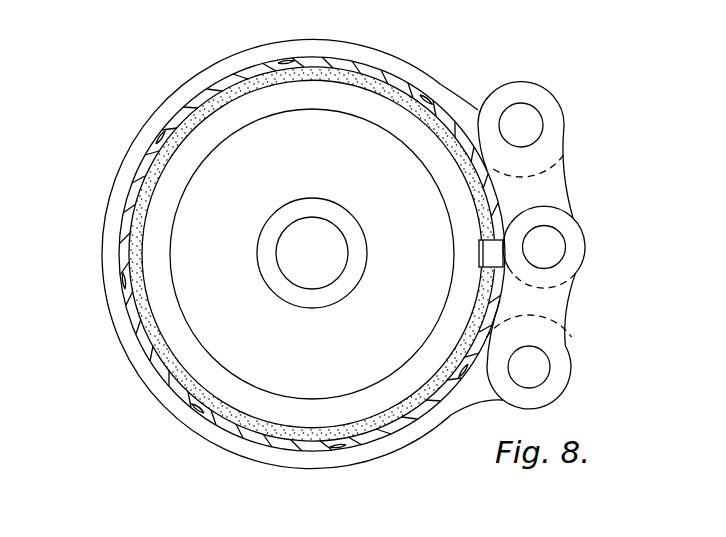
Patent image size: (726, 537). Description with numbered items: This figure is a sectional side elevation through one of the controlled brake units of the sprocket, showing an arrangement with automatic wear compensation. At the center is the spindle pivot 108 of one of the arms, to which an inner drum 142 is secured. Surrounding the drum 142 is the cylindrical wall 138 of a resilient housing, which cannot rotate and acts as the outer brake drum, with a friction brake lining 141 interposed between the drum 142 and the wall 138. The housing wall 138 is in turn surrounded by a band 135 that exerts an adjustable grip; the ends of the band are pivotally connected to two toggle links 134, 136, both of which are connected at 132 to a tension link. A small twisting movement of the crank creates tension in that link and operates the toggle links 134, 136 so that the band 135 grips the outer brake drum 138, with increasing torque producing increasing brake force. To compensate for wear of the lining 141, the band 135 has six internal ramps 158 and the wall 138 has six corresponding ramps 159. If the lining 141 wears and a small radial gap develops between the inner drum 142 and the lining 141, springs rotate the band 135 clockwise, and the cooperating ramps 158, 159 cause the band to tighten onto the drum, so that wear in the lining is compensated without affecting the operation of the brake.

The spindle pivot 108 is at (283, 223).
The connection point of toggle links to tension link 132 is at (553, 242).
The toggle link 134 is at (550, 180).
The band 135 is at (263, 453).
The toggle link 136 is at (558, 305).
The cylindrical wall 138 is at (150, 350).
The friction brake lining 141 is at (413, 403).
The inner drum 142 is at (253, 110).
The internal ramps 158 is at (220, 430).
The ramps 159 is at (281, 442).